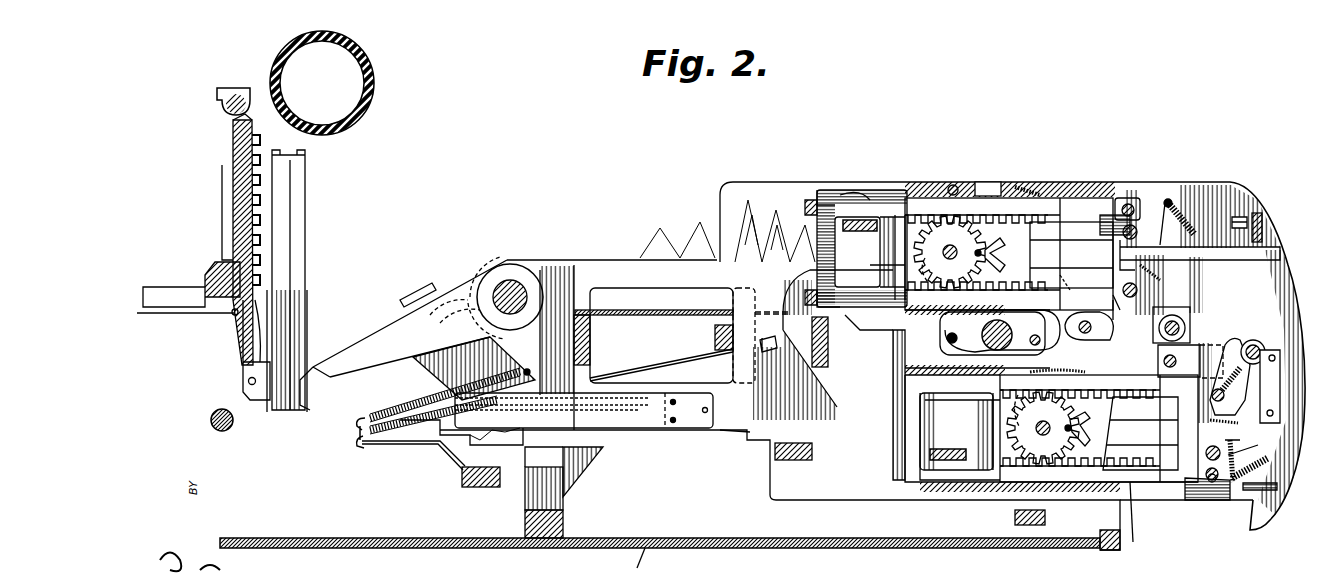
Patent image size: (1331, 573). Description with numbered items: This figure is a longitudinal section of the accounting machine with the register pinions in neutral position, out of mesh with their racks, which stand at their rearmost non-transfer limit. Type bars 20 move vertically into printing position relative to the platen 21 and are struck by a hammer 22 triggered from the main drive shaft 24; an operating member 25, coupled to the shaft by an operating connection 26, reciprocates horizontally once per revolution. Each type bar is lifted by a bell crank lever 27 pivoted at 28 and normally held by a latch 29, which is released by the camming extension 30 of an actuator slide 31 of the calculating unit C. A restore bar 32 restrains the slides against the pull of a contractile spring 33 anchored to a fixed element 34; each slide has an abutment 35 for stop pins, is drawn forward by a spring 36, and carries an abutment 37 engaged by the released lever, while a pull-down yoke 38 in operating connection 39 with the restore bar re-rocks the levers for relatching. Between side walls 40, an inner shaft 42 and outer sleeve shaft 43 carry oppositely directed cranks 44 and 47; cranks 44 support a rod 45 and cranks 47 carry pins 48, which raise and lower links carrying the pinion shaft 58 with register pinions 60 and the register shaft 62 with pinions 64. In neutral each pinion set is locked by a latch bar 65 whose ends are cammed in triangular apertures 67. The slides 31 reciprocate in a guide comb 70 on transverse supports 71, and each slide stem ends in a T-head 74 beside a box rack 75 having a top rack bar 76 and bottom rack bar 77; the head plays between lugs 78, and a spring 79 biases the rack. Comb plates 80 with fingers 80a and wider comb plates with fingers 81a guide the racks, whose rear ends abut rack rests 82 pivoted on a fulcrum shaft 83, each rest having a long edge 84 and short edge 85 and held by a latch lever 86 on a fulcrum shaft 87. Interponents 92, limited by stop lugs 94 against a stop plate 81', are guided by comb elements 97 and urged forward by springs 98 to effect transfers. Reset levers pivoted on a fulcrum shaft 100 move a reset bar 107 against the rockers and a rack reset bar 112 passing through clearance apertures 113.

The type bars 20 is at (233, 148).
The platen 21 is at (374, 74).
The hammer 22 is at (222, 108).
The main drive shaft 24 is at (211, 420).
The operating member 25 is at (470, 488).
The operating connection 26 is at (1052, 198).
The bell crank lever 27 is at (468, 275).
The pivot 28 is at (514, 288).
The latch 29 is at (580, 470).
The extension 30 is at (584, 410).
The actuator slide 31 is at (748, 280).
The restore bar 32 is at (715, 336).
The contractile spring 33 is at (416, 405).
The fixed element 34 is at (432, 450).
The abutment 35 is at (748, 440).
The contractile spring 36 is at (395, 440).
The abutment 37 is at (461, 432).
The pull-down yoke 38 is at (430, 283).
The operating connection 39 is at (645, 370).
The side walls 40 is at (1148, 182).
The inner shaft 42 is at (1010, 335).
The outer sleeve shaft 43 is at (997, 330).
The cranks 44 is at (975, 348).
The transverse rod 45 is at (946, 336).
The cranks 47 is at (1040, 268).
The pins 48 is at (1030, 334).
The register pinion shaft 58 is at (958, 250).
The register pinions 60 is at (918, 270).
The register shaft 62 is at (1050, 422).
The register pinions 64 is at (1008, 427).
The latch bar 65 is at (1040, 254).
The triangular aperture 67 is at (1032, 354).
The guide comb 70 is at (643, 310).
The transverse supports 71 is at (590, 338).
The T-head 74 is at (895, 280).
The box rack 75 is at (1080, 215).
The top rack bar 76 is at (917, 351).
The bottom rack bar 77 is at (1075, 292).
The lugs 78 is at (868, 418).
The contractile spring 79 is at (850, 218).
The comb plates 80 is at (830, 190).
The fingers 80a is at (860, 195).
The stop plate 81' is at (945, 178).
The fingers 81a is at (1030, 190).
The rack rests 82 is at (1180, 325).
The fulcrum shaft 83 is at (1122, 290).
The long edge face portion 84 is at (1156, 353).
The short edge face portion 85 is at (1140, 270).
The latch lever 86 is at (1172, 288).
The fulcrum shaft 87 is at (1184, 325).
The interponents 92 is at (1050, 250).
The stop lugs 94 is at (988, 190).
The comb elements 97 is at (1258, 490).
The contractile spring 98 is at (1180, 205).
The fulcrum shaft 100 is at (1138, 230).
The reset bar 107 is at (1081, 348).
The reset bar 112 is at (1125, 203).
The clearance apertures 113 is at (1212, 485).
The calculating unit C is at (1003, 180).